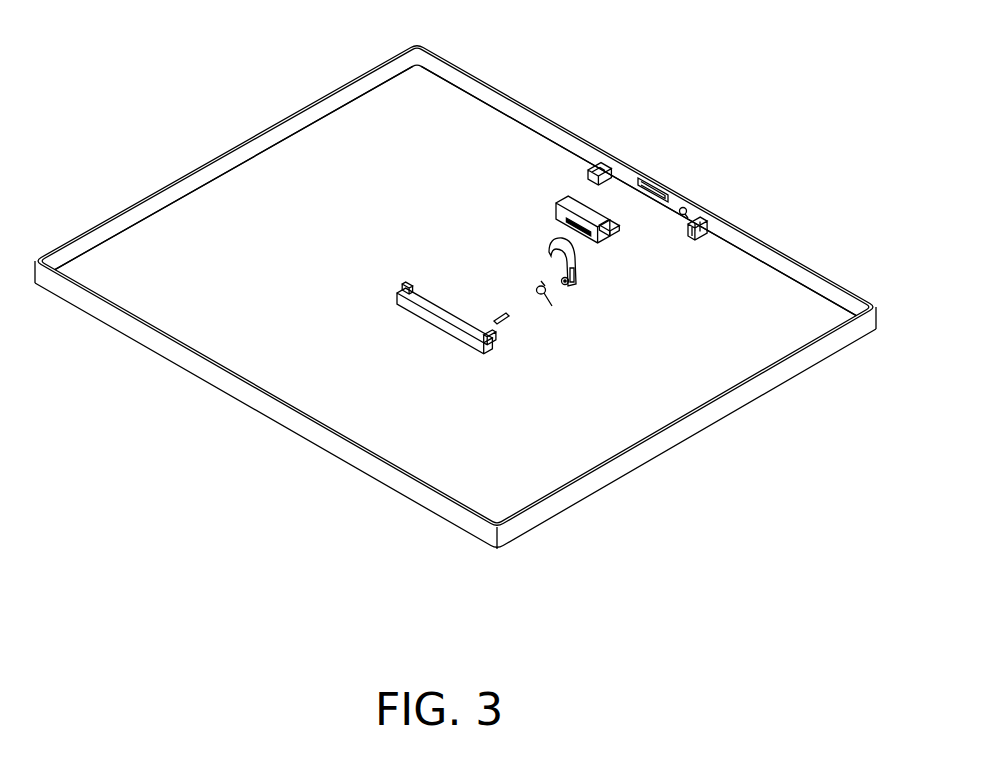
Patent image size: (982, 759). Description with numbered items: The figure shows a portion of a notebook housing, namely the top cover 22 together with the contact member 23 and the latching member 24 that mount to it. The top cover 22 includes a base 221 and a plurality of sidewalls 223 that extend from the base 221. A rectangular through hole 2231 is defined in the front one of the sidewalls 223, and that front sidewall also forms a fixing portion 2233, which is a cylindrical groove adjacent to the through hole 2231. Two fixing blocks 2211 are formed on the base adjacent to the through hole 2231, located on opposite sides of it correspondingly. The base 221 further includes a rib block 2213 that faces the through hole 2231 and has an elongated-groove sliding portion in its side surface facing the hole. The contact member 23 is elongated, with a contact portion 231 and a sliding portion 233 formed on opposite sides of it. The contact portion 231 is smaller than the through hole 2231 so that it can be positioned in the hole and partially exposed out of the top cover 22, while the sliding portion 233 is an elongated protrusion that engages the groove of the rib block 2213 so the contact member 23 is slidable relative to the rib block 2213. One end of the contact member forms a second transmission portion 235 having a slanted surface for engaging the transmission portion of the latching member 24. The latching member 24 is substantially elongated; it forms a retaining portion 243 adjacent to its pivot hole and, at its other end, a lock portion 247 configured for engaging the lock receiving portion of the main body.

The top cover 22 is at (473, 56).
The base 221 is at (510, 143).
The fixing blocks 2211 is at (608, 164).
The rib block 2213 is at (437, 312).
The sidewalls 223 is at (762, 238).
The through hole 2231 is at (653, 190).
The fixing portion 2233 is at (685, 212).
The contact member 23 is at (576, 232).
The contact portion 231 is at (591, 208).
The sliding portion 233 is at (572, 217).
The second transmission portion 235 is at (619, 232).
The latching member 24 is at (540, 285).
The retaining portion 243 is at (546, 275).
The lock portion 247 is at (552, 242).